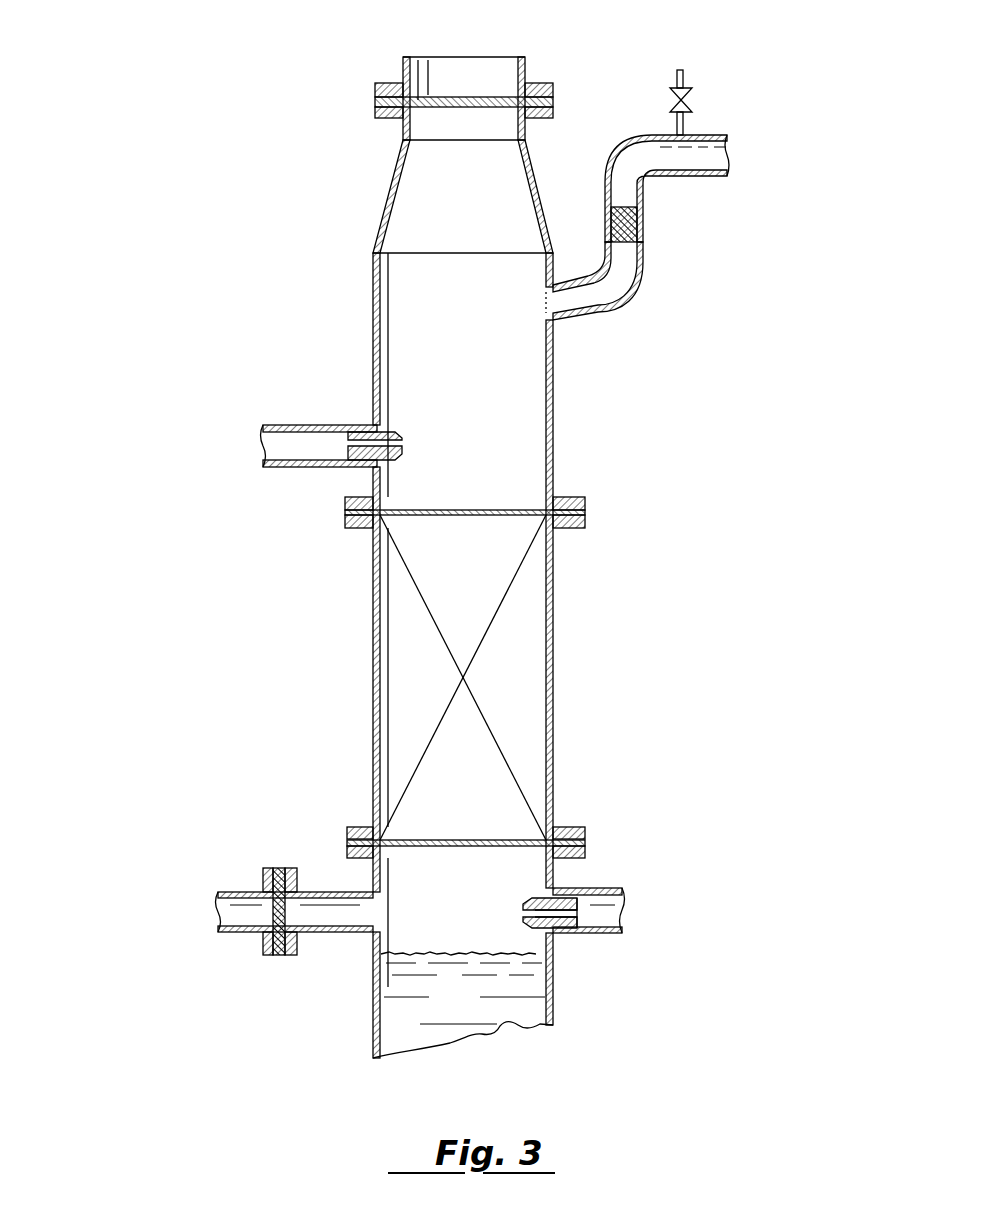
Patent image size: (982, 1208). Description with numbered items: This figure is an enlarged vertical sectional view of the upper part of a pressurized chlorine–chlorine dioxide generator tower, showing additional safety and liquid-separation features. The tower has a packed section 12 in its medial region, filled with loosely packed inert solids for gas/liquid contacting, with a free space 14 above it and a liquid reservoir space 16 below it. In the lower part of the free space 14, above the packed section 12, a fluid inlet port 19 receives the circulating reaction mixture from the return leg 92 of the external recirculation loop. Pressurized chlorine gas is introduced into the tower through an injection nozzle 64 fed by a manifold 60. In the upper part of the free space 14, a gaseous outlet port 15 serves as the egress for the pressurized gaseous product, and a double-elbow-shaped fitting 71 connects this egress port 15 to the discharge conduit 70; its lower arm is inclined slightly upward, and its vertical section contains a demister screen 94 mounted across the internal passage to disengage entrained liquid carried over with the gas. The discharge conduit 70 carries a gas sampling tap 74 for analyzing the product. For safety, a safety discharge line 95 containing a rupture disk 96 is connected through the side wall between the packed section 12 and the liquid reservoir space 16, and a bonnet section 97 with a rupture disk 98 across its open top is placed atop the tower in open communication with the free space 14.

The packed section 12 is at (414, 673).
The free space 14 is at (480, 303).
The gaseous outlet port 15 is at (558, 308).
The liquid reservoir space 16 is at (477, 1011).
The fluid inlet port 19 is at (363, 433).
The manifold 60 is at (590, 932).
The injection nozzle 64 is at (538, 902).
The discharge conduit 70 is at (683, 173).
The double-elbow-shaped fitting 71 is at (582, 315).
The gas sampling tap 74 is at (690, 97).
The return leg 92 is at (298, 423).
The demister screen 94 is at (640, 227).
The safety discharge line 95 is at (338, 932).
The rupture disk 96 is at (278, 870).
The bonnet section 97 is at (486, 191).
The rupture disk 98 is at (468, 98).